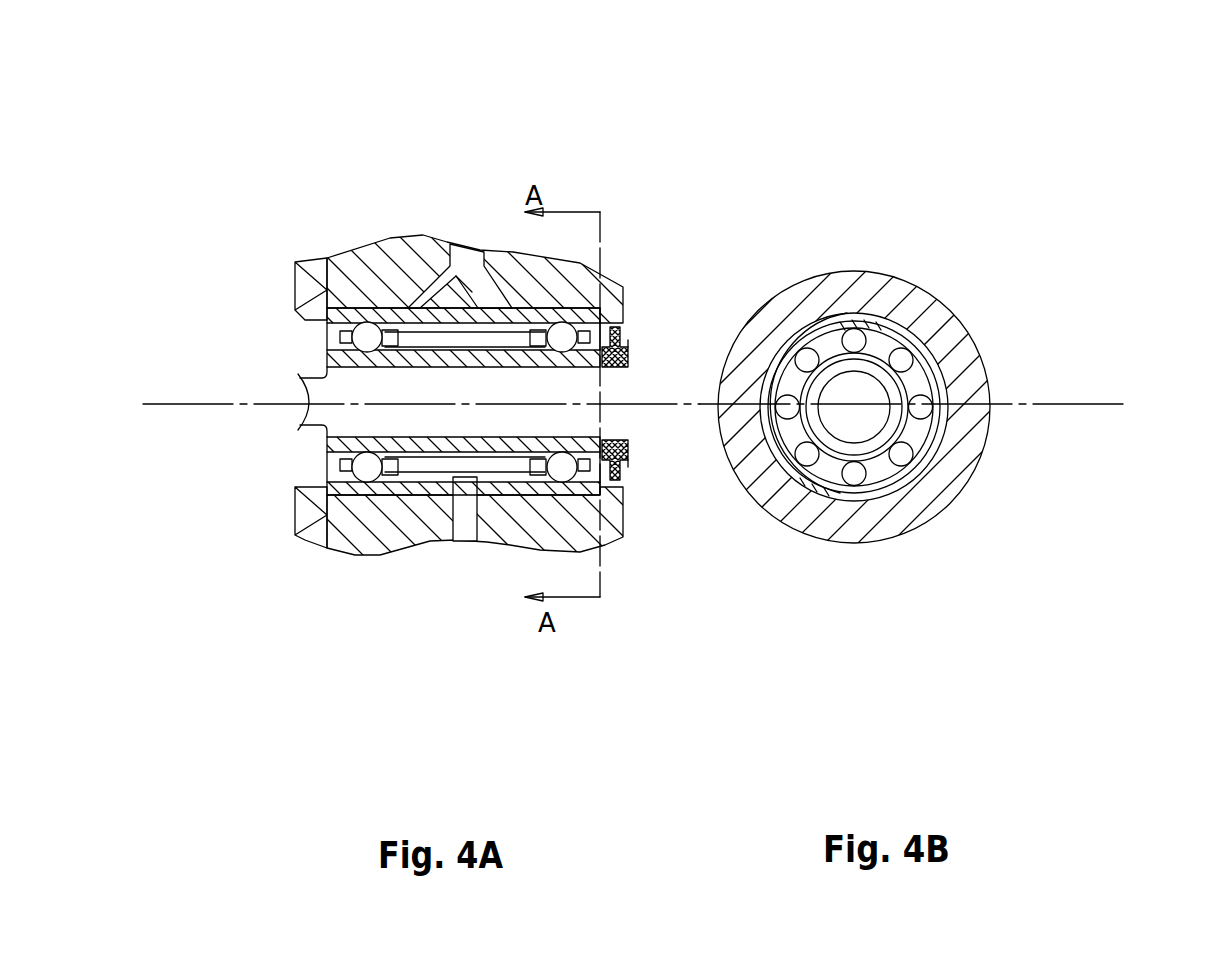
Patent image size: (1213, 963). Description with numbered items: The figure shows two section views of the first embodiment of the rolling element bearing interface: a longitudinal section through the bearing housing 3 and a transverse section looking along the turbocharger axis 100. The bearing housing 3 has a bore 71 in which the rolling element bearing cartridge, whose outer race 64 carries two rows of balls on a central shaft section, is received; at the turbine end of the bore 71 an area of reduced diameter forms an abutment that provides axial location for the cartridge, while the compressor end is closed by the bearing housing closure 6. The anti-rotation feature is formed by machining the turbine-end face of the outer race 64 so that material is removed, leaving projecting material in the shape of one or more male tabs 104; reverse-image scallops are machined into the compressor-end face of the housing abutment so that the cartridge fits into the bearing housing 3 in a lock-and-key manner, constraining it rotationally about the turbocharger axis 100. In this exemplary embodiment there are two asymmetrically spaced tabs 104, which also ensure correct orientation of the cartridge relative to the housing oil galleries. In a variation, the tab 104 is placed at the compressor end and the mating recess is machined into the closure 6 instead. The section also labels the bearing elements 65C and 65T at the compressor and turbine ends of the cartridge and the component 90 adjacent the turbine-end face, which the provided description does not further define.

In FIG. 4A, the bearing housing 3 is at (388, 280).
In FIG. 4B, the bearing housing 3 is at (848, 293).
In FIG. 4A, the bearing housing closure 6 is at (313, 292).
In FIG. 4A, the outer race 64 is at (542, 310).
In FIG. 4A, the bearing cartridge 65C is at (353, 447).
In FIG. 4A, the retaining ring 65T is at (616, 490).
In FIG. 4A, the bore 71 is at (383, 310).
In FIG. 4A, the seal 90 is at (628, 455).
In FIG. 4B, the turbocharger axis 100 is at (1030, 395).
In FIG. 4B, the male tab 104 is at (872, 323).